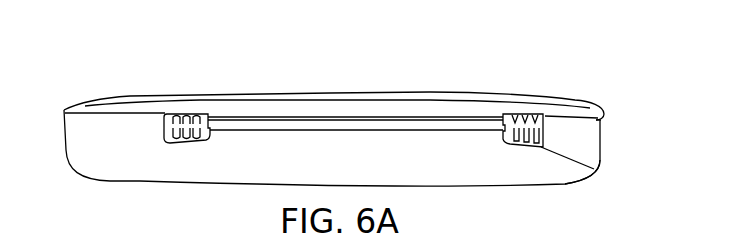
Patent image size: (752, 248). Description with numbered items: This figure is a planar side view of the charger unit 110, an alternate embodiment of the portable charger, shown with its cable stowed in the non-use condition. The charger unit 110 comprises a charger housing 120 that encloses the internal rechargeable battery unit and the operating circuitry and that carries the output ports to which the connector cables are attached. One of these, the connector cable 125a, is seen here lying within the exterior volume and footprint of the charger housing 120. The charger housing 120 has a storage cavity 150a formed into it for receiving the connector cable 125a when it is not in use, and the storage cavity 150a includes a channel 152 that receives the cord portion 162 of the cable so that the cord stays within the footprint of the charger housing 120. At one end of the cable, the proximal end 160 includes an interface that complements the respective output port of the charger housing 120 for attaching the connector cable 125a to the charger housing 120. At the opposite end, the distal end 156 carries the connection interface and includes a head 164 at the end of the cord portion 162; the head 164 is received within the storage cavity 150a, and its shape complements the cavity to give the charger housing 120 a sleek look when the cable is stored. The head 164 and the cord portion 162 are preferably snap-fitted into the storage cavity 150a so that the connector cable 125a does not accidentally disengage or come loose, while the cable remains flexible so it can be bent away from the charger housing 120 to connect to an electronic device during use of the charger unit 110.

The charger unit 110 is at (516, 72).
The charger housing 120 is at (332, 170).
The connector cable 125a is at (381, 106).
The storage cavity 150a is at (601, 179).
The channel 152 is at (478, 106).
The distal end 156 is at (623, 109).
The proximal end 160 is at (128, 70).
The cord portion 162 is at (255, 122).
The head 164 is at (580, 143).